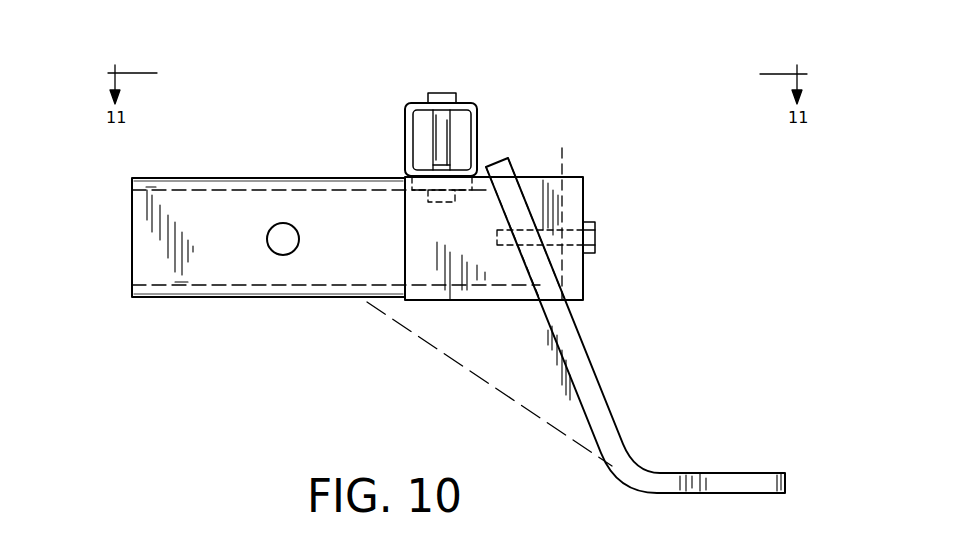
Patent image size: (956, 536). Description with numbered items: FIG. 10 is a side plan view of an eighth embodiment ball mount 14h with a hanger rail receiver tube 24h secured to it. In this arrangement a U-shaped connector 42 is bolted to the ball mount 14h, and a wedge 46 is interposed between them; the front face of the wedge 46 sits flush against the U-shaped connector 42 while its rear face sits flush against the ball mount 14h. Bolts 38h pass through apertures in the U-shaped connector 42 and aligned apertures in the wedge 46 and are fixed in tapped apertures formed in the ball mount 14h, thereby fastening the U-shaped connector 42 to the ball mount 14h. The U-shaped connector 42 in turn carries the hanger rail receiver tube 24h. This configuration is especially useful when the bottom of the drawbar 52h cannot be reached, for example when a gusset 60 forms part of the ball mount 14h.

The ball mount 14h is at (680, 300).
The hanger rail receiver tube 24h is at (470, 103).
The bolts 38h is at (440, 95).
The U-shaped connector 42 is at (583, 197).
The wedge 46 is at (559, 209).
The drawbar 52h is at (207, 200).
The gusset 60 is at (480, 376).